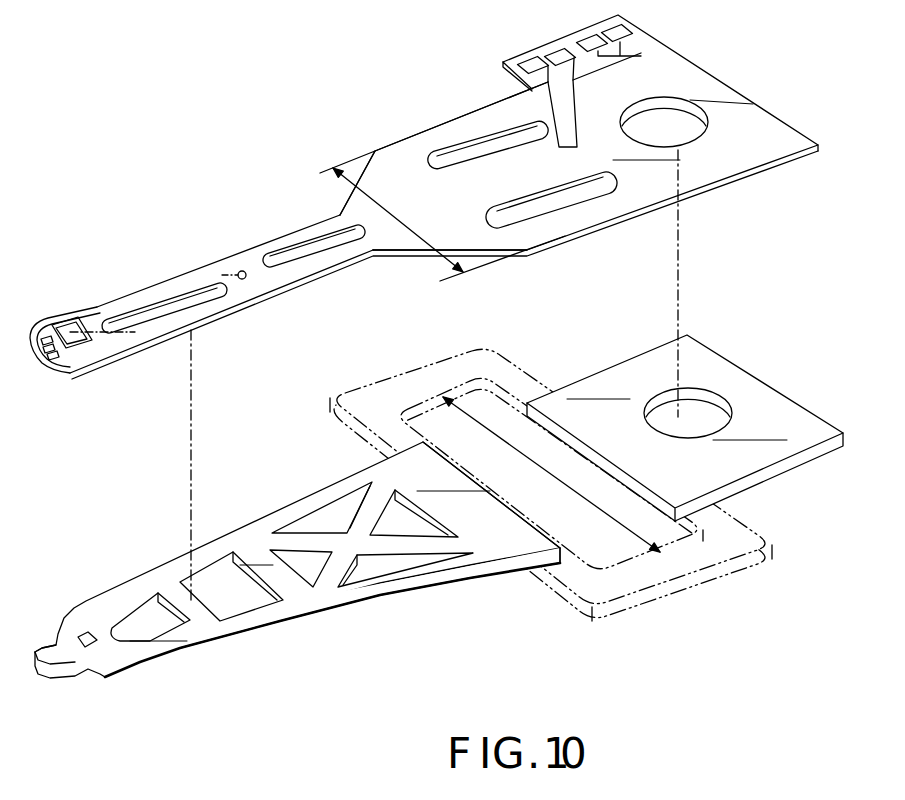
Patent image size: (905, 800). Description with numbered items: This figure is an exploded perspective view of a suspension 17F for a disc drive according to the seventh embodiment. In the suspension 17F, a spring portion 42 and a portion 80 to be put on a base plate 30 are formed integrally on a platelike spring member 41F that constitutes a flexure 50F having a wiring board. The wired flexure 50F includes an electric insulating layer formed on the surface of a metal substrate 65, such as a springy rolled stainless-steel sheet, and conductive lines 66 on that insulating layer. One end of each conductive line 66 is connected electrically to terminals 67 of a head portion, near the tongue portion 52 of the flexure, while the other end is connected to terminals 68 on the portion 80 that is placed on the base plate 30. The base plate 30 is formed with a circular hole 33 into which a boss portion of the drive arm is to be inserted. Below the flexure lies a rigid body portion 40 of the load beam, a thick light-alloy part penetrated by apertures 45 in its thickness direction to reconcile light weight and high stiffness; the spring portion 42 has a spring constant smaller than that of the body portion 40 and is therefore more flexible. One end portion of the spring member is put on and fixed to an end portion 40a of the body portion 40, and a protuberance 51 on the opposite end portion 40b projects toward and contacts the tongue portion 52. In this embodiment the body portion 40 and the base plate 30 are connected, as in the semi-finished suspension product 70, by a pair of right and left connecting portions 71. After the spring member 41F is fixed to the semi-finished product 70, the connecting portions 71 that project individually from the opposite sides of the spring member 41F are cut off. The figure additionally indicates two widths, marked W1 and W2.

The suspension 17F is at (424, 212).
The spring member 41F is at (481, 188).
The spring portion 42 is at (455, 133).
The terminals 68 is at (562, 50).
The portion to be put on base plate 80 is at (660, 118).
The flexure 50F is at (221, 286).
The conductive lines 66 is at (182, 313).
The metal substrate 65 is at (228, 302).
The tongue portion 52 is at (82, 345).
The terminals of head portion 67 is at (42, 370).
The width of wide portion W2 is at (415, 234).
The base plate 30 is at (685, 428).
The circular hole 33 is at (717, 413).
The semi-finished suspension product 70 is at (576, 491).
The connecting portions 71 is at (407, 363).
The width of frame opening W1 is at (565, 487).
The rigid body portion 40 is at (297, 585).
The end portion of rigid body portion 40a is at (477, 517).
The end portion of body portion 40b is at (100, 670).
The apertures 45 is at (297, 565).
The protuberance 51 is at (85, 612).